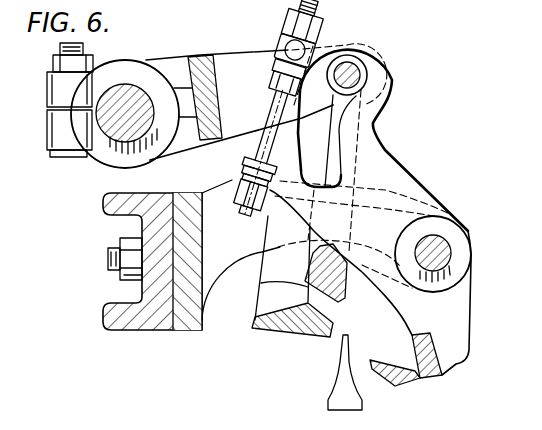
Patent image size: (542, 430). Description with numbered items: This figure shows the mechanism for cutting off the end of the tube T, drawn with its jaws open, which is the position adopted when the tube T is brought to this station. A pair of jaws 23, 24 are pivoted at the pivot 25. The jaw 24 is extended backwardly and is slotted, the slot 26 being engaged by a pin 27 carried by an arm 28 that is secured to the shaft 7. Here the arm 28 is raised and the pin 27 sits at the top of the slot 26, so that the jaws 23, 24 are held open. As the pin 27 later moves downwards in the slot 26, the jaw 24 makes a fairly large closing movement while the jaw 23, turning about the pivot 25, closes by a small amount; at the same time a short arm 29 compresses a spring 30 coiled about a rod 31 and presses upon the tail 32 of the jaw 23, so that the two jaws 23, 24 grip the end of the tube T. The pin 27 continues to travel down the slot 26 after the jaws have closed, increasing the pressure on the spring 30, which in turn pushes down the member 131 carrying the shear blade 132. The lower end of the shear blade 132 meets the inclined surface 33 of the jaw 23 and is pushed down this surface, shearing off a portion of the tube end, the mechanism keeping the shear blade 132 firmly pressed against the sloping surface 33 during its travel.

The shaft 7 is at (130, 110).
The arm 28 is at (233, 65).
The short arm 29 is at (285, 36).
The spring 30 is at (274, 78).
The rod 31 is at (268, 153).
The tail of the jaw 32 is at (239, 177).
The pin 27 is at (358, 72).
The slot 26 is at (343, 118).
The member 131 is at (333, 162).
The shear blade 132 is at (347, 258).
The pivot 25 is at (450, 248).
The jaw 24 is at (437, 374).
The jaw 23 is at (262, 329).
The inclined surface 33 is at (332, 317).
The tube T is at (352, 397).